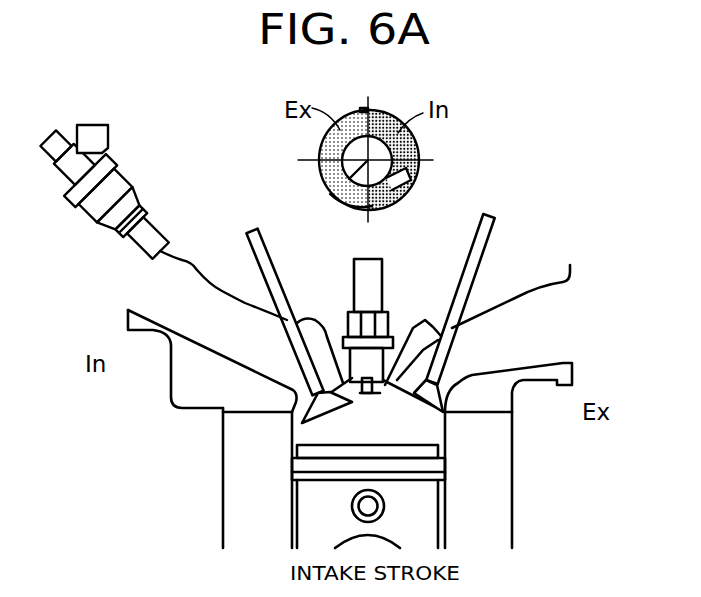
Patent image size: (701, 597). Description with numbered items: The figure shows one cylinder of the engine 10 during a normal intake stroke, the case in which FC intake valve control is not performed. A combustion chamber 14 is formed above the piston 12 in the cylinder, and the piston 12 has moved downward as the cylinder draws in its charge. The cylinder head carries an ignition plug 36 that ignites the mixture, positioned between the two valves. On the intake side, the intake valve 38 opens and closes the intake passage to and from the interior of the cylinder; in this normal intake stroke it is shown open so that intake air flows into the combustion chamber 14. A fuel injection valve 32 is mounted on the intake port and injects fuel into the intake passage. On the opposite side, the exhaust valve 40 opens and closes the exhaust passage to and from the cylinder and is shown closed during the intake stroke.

The engine 10 is at (537, 193).
The piston 12 is at (422, 498).
The combustion chamber 14 is at (313, 435).
The fuel injection valve 32 is at (130, 178).
The ignition plug 36 is at (385, 297).
The intake valve 38 is at (248, 257).
The exhaust valve 40 is at (485, 248).